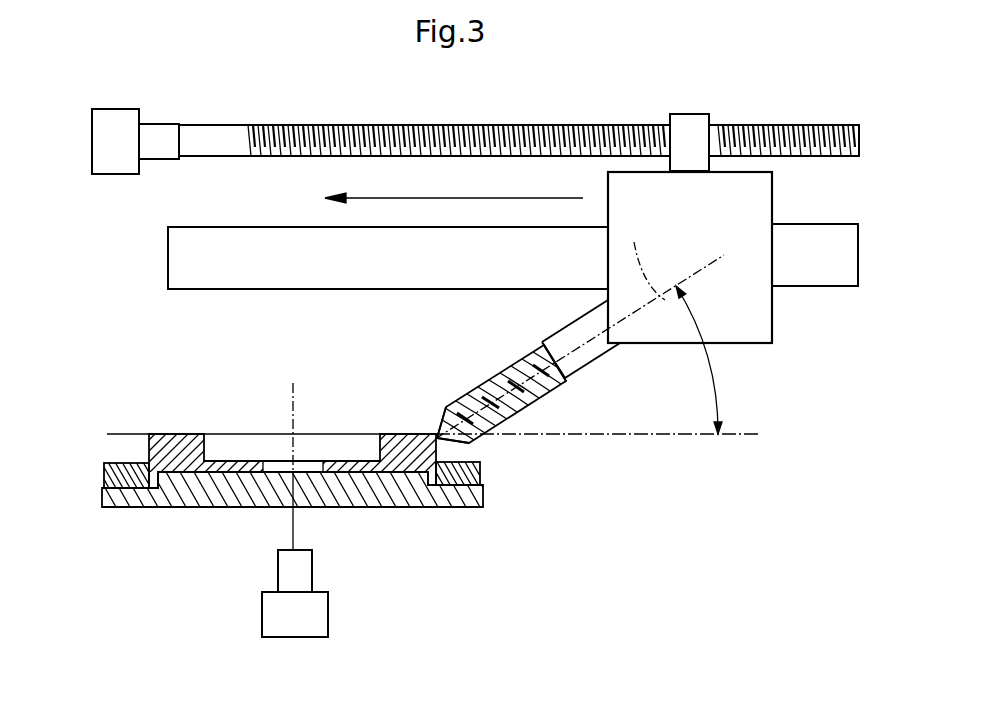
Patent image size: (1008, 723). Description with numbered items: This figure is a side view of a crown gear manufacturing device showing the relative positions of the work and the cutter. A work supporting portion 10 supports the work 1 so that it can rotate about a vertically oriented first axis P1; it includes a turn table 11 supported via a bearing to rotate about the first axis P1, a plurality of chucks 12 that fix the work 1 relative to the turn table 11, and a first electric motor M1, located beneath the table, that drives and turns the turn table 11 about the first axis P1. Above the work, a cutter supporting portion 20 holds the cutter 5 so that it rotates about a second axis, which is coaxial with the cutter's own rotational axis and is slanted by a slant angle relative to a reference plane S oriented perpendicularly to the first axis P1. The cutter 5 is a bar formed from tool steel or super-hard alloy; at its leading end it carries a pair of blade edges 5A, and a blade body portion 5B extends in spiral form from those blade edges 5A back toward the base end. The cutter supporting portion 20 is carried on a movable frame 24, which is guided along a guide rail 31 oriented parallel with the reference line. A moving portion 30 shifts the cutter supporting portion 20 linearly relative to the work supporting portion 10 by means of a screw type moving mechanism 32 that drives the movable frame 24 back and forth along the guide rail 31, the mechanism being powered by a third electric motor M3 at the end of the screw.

The work 1 is at (178, 438).
The cutter 5 is at (473, 367).
The blade edges 5A is at (432, 412).
The blade body portion 5B is at (515, 350).
The work supporting portion 10 is at (309, 479).
The turn table 11 is at (380, 500).
The chucks 12 is at (130, 466).
The cutter supporting portion 20 is at (763, 349).
The movable frame 24 is at (765, 206).
The moving portion 30 is at (430, 121).
The guide rail 31 is at (178, 258).
The screw type moving mechanism 32 is at (698, 124).
The first electric motor M1 is at (323, 610).
The third electric motor M3 is at (114, 117).
The first axis P1 is at (296, 393).
The reference plane S is at (645, 440).